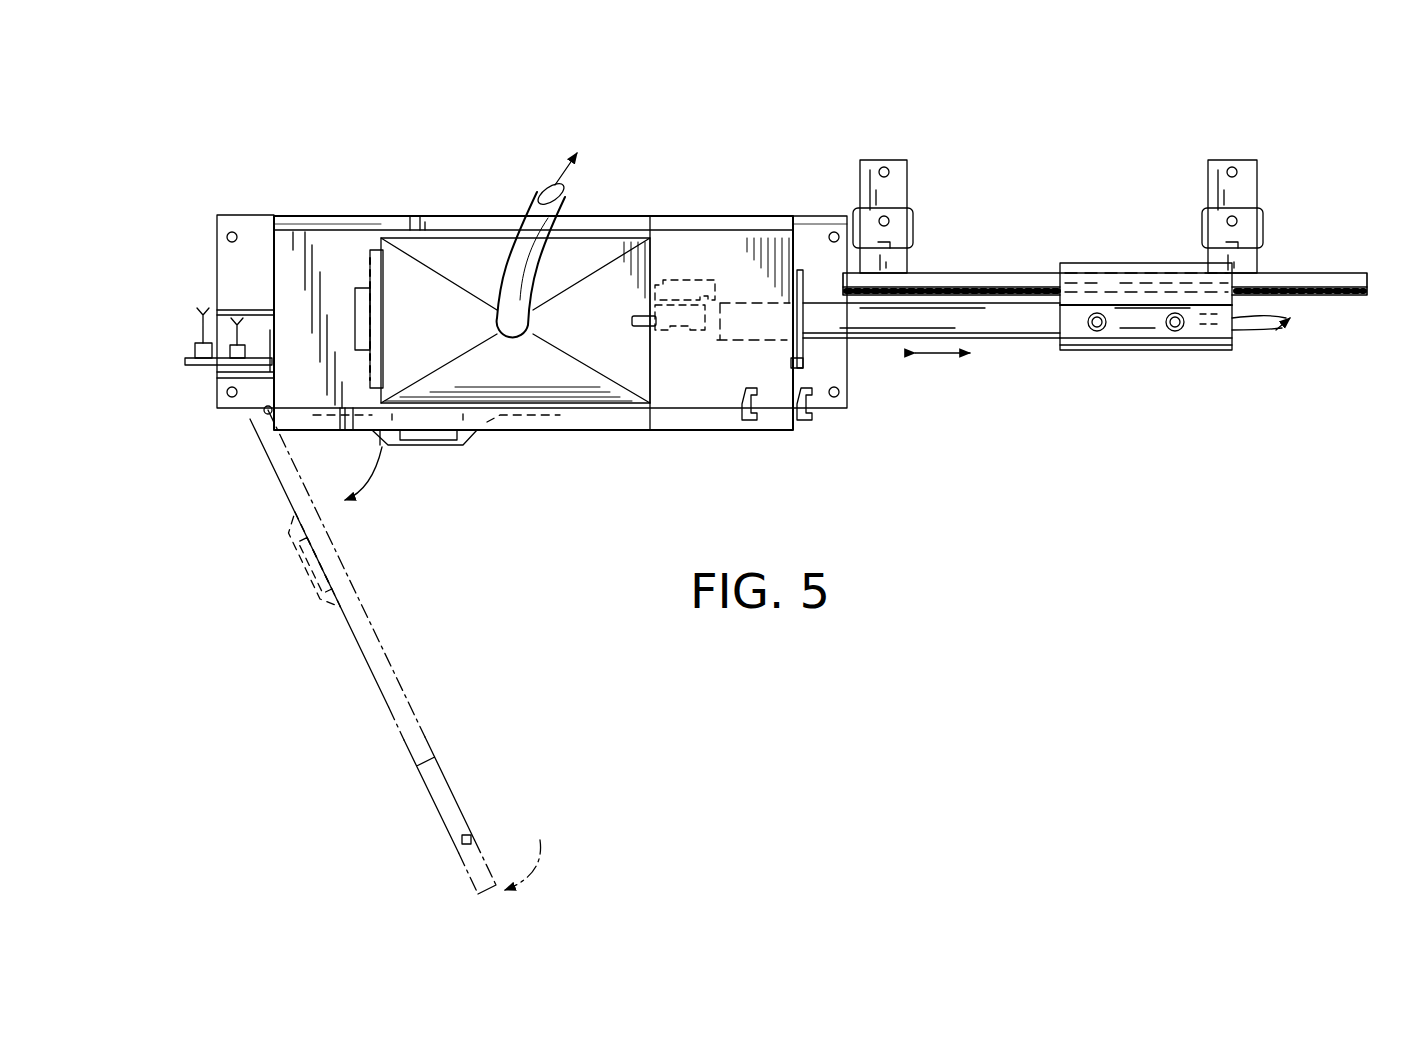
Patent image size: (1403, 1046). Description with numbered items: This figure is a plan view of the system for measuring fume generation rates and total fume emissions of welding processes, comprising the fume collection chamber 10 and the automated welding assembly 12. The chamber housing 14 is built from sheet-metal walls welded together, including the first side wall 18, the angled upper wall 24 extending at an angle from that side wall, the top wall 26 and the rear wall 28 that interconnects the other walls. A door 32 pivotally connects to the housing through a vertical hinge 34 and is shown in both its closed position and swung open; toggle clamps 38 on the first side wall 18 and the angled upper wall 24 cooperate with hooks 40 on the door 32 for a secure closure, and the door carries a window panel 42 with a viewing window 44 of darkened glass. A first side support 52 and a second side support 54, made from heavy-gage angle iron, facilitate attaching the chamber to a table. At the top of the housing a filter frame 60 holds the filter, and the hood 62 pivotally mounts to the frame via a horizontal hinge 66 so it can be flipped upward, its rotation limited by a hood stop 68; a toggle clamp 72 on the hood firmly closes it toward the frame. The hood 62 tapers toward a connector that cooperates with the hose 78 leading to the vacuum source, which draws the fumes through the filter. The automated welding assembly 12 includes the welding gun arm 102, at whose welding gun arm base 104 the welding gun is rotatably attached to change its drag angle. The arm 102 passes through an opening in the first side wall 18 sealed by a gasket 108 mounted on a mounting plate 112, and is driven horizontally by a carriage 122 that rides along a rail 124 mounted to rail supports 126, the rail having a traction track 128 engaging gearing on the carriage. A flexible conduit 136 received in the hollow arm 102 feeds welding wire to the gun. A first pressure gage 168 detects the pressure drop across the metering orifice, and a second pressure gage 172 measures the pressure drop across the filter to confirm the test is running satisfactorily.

The fume collection chamber 10 is at (738, 108).
The automated welding assembly 12 is at (1010, 256).
The chamber housing 14 is at (722, 212).
The first side wall 18 is at (806, 238).
The angled upper wall 24 is at (690, 238).
The top wall 26 is at (293, 240).
The rear wall 28 is at (320, 228).
The door 32 is at (590, 434).
The vertical hinge 34 is at (262, 416).
The toggle clamps 38 is at (755, 418).
The hooks 40 is at (474, 840).
The window panel 42 is at (462, 446).
The viewing window 44 is at (428, 446).
The first side support 52 is at (842, 380).
The second side support 54 is at (268, 406).
The filter frame 60 is at (657, 243).
The hood 62 is at (471, 254).
The horizontal hinge 66 is at (352, 248).
The hood stop 68 is at (356, 320).
The toggle clamp 72 is at (642, 326).
The hose 78 is at (528, 200).
The welding gun arm 102 is at (1015, 325).
The welding gun arm base 104 is at (713, 277).
The gasket 108 is at (815, 349).
The mounting plate 112 is at (793, 368).
The carriage 122 is at (1150, 352).
The rail 124 is at (1323, 280).
The rail supports 126 is at (910, 240).
The traction track 128 is at (1325, 296).
The flexible conduit 136 is at (1278, 332).
The first pressure gage 168 is at (200, 363).
The second pressure gage 172 is at (243, 374).